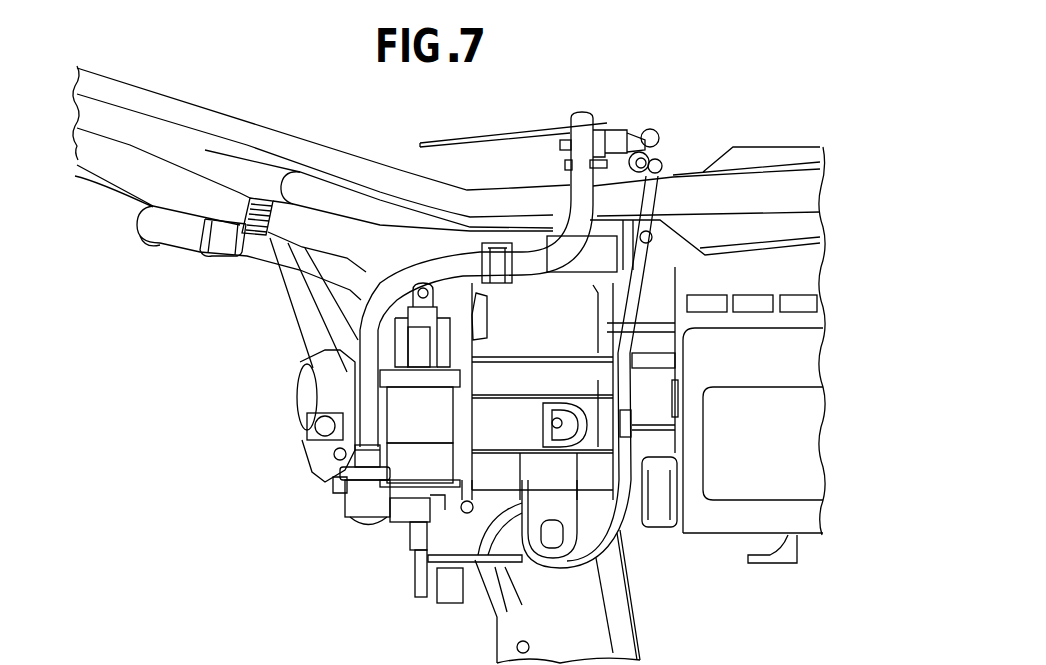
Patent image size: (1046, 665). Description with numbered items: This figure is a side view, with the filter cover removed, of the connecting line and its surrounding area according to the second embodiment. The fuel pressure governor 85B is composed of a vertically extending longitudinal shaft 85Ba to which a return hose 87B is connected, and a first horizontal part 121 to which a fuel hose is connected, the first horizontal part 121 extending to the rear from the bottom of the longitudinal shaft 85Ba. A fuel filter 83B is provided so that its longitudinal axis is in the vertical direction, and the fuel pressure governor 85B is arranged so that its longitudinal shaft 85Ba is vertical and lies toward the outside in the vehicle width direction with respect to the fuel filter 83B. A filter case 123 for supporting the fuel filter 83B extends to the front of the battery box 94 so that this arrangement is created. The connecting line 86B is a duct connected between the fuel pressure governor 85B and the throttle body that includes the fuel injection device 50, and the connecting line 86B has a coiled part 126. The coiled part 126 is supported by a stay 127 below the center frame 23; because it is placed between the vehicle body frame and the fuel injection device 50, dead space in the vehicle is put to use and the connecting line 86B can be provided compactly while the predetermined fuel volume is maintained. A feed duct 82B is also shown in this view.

The center frame 23 is at (243, 150).
The return hose 87B is at (582, 127).
The feed duct 82B is at (670, 140).
The connecting line 86B is at (182, 230).
The coiled part 126 is at (150, 240).
The stay 127 is at (223, 257).
The fuel filter 83B is at (410, 427).
The fuel injection device 50 is at (317, 450).
The longitudinal shaft 85Ba is at (363, 460).
The filter case 123 is at (333, 487).
The fuel pressure governor 85B is at (362, 510).
The first horizontal part 121 is at (410, 513).
The battery box 94 is at (707, 515).